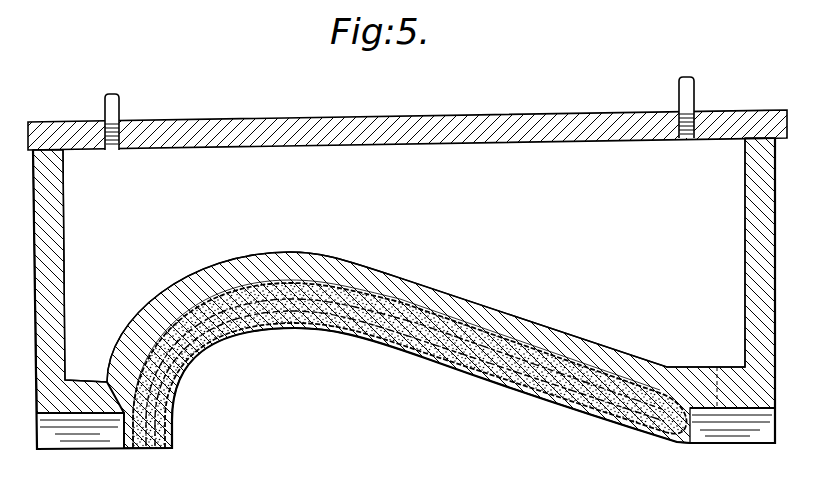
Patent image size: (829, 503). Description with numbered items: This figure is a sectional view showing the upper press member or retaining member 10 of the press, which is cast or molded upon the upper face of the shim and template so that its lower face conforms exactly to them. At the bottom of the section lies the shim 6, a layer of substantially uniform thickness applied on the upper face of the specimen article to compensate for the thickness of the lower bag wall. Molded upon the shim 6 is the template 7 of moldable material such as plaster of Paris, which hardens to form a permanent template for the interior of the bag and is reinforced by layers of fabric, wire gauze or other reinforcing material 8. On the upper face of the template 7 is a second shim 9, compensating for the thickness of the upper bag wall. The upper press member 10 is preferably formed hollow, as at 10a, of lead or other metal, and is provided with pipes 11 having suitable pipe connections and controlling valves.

The upper press member 10 is at (378, 128).
The hollow 10a is at (404, 293).
The pipes 11 is at (120, 107).
The second shim 9 is at (417, 308).
The template 7 is at (447, 330).
The reinforcing material 8 is at (512, 372).
The shim 6 is at (425, 358).